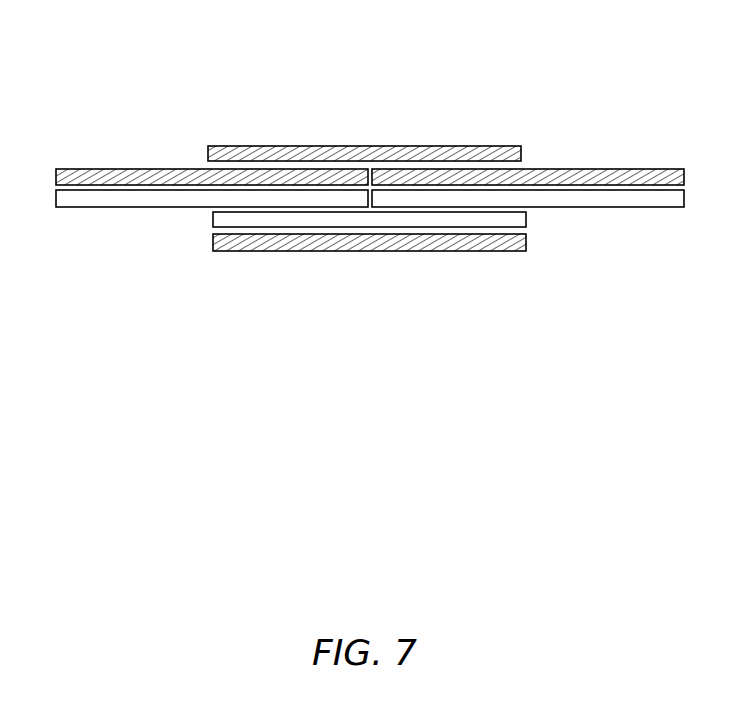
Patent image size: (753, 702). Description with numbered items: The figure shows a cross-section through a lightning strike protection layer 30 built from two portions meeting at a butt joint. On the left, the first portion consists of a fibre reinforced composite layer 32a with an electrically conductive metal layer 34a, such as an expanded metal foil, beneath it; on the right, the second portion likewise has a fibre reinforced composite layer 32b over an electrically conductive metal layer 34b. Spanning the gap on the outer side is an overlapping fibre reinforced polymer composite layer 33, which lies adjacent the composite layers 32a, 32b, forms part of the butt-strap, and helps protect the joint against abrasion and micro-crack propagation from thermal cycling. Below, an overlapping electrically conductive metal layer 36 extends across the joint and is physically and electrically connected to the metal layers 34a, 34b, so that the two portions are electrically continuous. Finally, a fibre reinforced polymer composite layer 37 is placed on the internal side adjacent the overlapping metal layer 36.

The lightning strike protection layer 30 is at (107, 92).
The overlapping fibre reinforced polymer composite layer 33 is at (283, 152).
The fibre reinforced composite layer 32a is at (177, 177).
The fibre reinforced composite layer 32b is at (550, 174).
The electrically conductive metal layer 34a is at (172, 200).
The electrically conductive metal layer 34b is at (570, 199).
The overlapping electrically conductive metal layer 36 is at (478, 222).
The fibre reinforced polymer composite layer 37 is at (298, 238).